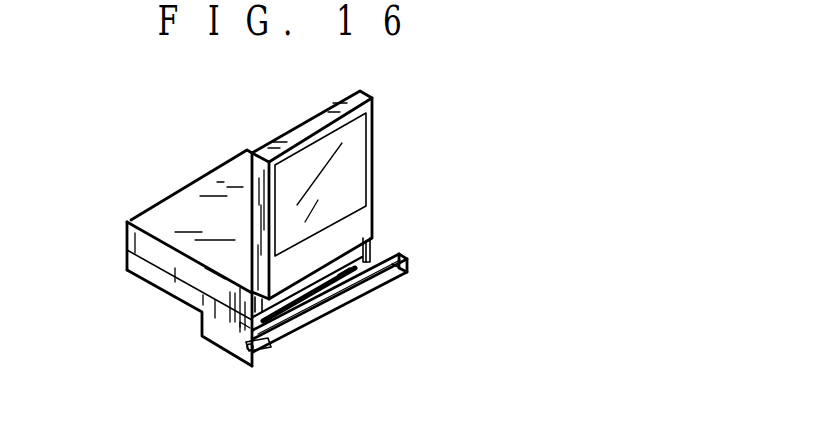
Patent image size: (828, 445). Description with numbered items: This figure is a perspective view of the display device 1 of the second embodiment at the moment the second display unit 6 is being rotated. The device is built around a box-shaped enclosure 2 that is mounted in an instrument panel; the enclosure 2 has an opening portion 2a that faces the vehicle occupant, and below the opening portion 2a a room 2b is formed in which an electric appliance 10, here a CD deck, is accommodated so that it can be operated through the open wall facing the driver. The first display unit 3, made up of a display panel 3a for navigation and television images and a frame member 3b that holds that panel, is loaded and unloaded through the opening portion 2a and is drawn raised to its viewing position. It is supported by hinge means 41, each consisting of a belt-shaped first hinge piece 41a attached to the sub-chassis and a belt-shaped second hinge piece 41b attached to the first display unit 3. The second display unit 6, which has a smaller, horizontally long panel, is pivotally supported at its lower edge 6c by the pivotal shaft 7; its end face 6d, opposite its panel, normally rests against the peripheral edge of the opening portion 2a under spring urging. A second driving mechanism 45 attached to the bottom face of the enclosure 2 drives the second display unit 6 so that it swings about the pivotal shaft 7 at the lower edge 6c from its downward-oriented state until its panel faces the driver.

The display device 1 is at (409, 91).
The enclosure 2 is at (182, 184).
The opening portion 2a is at (368, 246).
The room 2b is at (320, 288).
The first display unit 3 is at (378, 137).
The display panel 3a is at (353, 147).
The frame member 3b is at (366, 206).
The second display unit 6 is at (430, 252).
The lower edge 6c is at (274, 346).
The end face 6d is at (390, 265).
The pivotal shaft 7 is at (251, 350).
The electric appliance 10 is at (343, 270).
The hinge means 41 is at (383, 228).
The first hinge piece 41a is at (245, 330).
The second hinge piece 41b is at (258, 288).
The second driving mechanism 45 is at (201, 348).